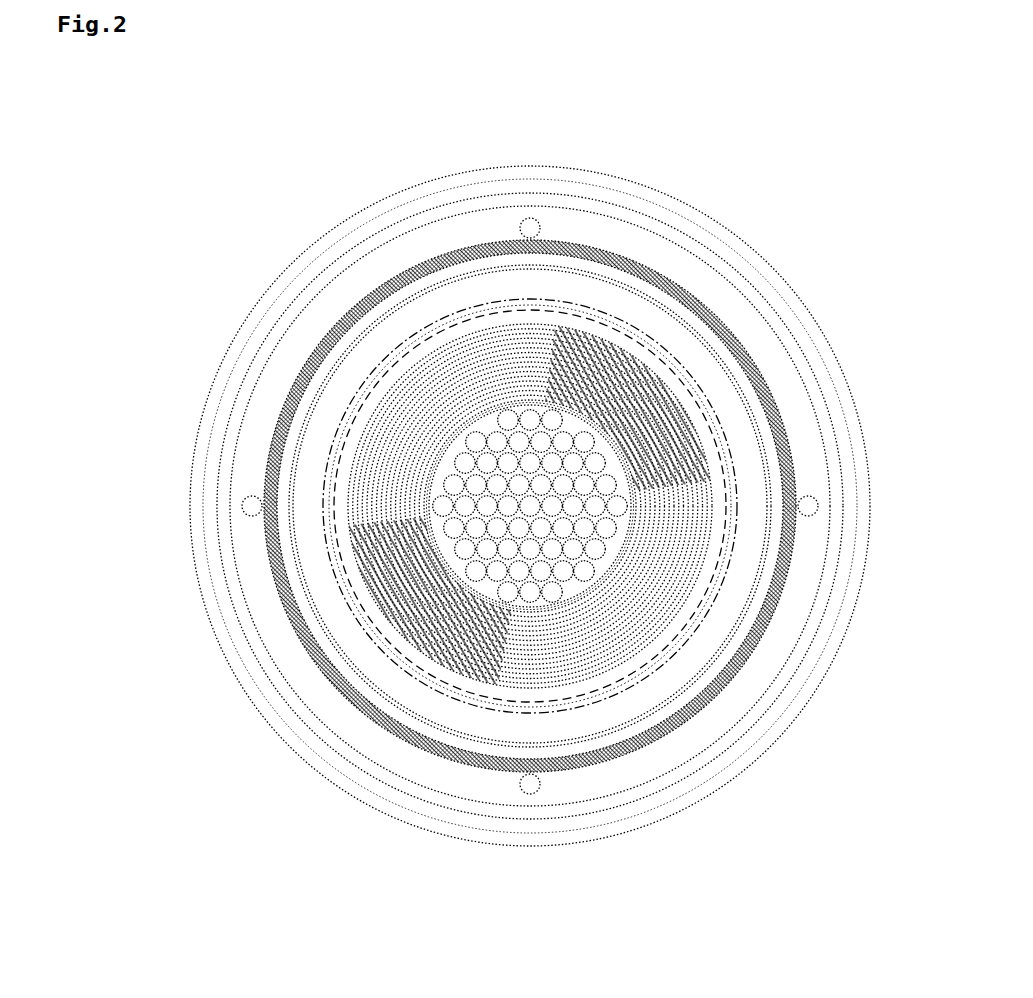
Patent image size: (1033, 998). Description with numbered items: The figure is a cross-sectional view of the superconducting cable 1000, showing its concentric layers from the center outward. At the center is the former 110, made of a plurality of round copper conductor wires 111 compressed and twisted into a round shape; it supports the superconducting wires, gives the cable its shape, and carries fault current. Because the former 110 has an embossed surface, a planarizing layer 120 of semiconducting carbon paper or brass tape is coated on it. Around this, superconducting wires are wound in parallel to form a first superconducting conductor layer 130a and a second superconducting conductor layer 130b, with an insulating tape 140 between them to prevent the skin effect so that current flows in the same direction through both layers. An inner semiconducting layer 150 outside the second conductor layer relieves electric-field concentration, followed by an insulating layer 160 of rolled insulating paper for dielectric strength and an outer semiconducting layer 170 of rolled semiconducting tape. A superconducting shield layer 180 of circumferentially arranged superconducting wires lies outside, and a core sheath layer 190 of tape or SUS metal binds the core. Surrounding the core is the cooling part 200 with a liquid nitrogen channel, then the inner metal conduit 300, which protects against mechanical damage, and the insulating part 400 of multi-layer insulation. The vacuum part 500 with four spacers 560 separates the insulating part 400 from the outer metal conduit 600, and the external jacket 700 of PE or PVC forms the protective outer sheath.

The superconducting cable 1000 is at (258, 163).
The former 110 is at (450, 563).
The conductor wires 111 is at (453, 555).
The planarizing layer 120 is at (413, 522).
The first superconducting conductor layer 130a is at (427, 470).
The second superconducting conductor layer 130b is at (490, 400).
The insulating tape 140 is at (447, 432).
The inner semiconducting layer 150 is at (530, 392).
The insulating layer 160 is at (598, 355).
The outer semiconducting layer 170 is at (658, 363).
The superconducting shield layer 180 is at (697, 397).
The core sheath layer 190 is at (728, 457).
The cooling part 200 is at (753, 477).
The inner metal conduit 300 is at (767, 572).
The insulating part 400 is at (750, 652).
The vacuum part 500 is at (715, 716).
The spacer 560 is at (533, 795).
The outer metal conduit 600 is at (623, 802).
The external jacket 700 is at (574, 832).